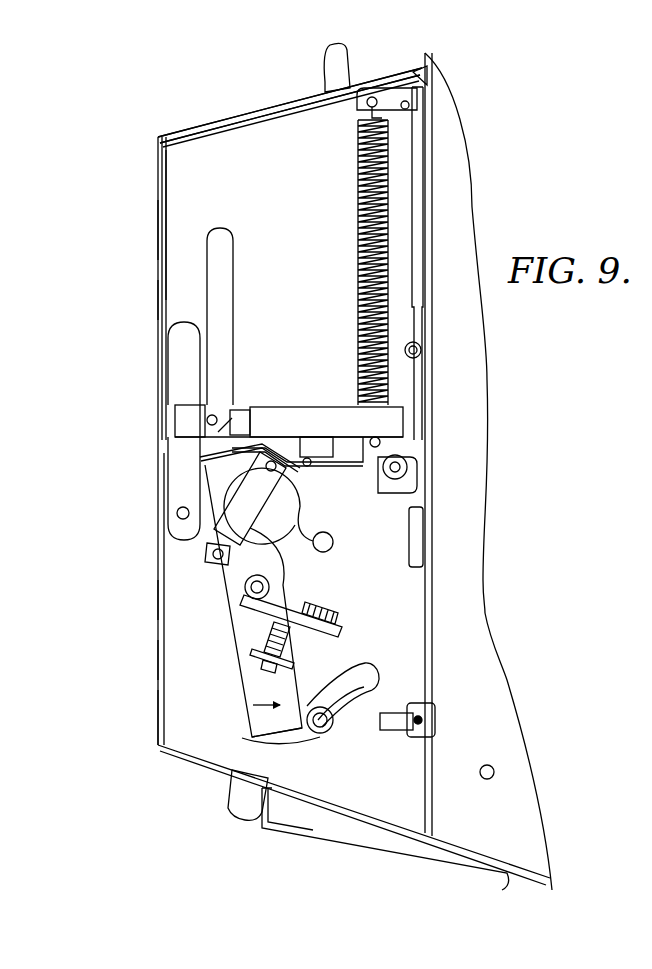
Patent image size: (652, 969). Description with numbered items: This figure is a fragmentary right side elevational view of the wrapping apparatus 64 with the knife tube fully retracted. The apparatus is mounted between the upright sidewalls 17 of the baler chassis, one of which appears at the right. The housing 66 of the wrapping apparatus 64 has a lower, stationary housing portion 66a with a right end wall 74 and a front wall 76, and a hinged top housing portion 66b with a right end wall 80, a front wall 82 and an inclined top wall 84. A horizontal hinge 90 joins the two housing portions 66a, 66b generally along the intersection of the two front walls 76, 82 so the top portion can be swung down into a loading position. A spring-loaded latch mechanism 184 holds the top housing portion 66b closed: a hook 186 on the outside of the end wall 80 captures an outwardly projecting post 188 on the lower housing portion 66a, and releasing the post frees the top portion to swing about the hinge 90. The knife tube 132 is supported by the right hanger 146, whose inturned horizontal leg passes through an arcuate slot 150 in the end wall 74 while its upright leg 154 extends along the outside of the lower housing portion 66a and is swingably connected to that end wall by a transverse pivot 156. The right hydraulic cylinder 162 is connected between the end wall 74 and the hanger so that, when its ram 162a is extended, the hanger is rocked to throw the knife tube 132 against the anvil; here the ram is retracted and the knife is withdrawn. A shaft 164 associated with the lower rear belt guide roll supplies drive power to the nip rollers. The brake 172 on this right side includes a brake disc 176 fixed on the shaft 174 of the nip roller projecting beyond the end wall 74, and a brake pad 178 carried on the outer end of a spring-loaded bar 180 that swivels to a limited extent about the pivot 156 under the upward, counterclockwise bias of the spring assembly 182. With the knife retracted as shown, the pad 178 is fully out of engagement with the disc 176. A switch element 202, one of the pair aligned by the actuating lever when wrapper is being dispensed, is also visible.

The sidewall 17 is at (465, 223).
The wrapping apparatus 64 is at (168, 120).
The housing 66 is at (128, 457).
The lower housing portion 66a is at (156, 600).
The top housing portion 66b is at (156, 230).
The right end wall 74 is at (177, 657).
The front wall 76 is at (157, 688).
The right end wall 80 is at (180, 190).
The front wall 82 is at (158, 298).
The inclined top wall 84 is at (308, 98).
The horizontal hinge 90 is at (178, 517).
The tubular member 132 is at (357, 707).
The right hanger 146 is at (245, 730).
The arcuate slot 150 is at (370, 672).
The upright leg 154 is at (252, 680).
The transverse pivot 156 is at (246, 586).
The right hydraulic cylinder 162 is at (240, 502).
The ram 162a is at (207, 545).
The shaft 164 is at (483, 778).
The brake 172 is at (320, 598).
The shaft 174 is at (317, 512).
The brake disc 176 is at (343, 518).
The brake pad 178 is at (337, 618).
The spring-loaded bar 180 is at (257, 610).
The spring assembly 182 is at (290, 637).
The latch mechanism 184 is at (250, 392).
The hook 186 is at (412, 442).
The post 188 is at (407, 470).
The switch element 202 is at (430, 717).